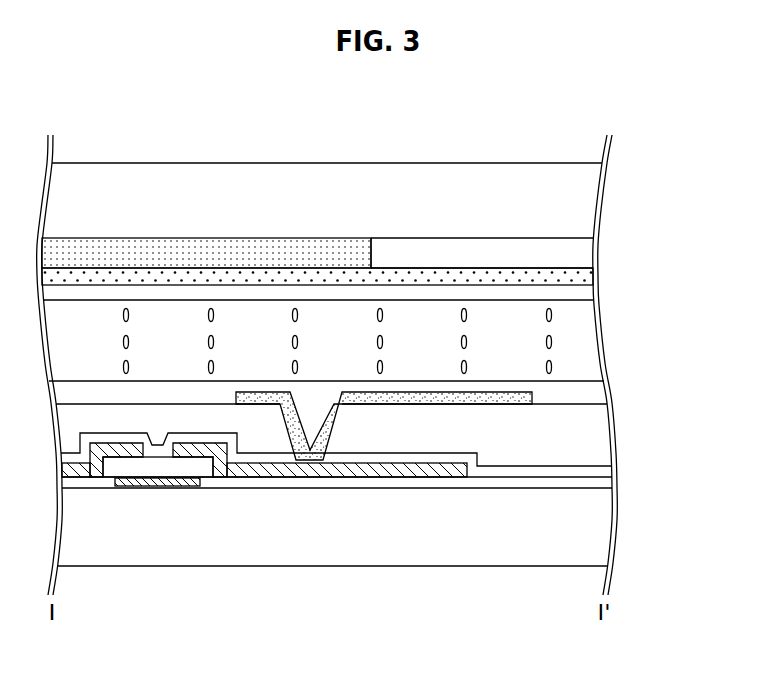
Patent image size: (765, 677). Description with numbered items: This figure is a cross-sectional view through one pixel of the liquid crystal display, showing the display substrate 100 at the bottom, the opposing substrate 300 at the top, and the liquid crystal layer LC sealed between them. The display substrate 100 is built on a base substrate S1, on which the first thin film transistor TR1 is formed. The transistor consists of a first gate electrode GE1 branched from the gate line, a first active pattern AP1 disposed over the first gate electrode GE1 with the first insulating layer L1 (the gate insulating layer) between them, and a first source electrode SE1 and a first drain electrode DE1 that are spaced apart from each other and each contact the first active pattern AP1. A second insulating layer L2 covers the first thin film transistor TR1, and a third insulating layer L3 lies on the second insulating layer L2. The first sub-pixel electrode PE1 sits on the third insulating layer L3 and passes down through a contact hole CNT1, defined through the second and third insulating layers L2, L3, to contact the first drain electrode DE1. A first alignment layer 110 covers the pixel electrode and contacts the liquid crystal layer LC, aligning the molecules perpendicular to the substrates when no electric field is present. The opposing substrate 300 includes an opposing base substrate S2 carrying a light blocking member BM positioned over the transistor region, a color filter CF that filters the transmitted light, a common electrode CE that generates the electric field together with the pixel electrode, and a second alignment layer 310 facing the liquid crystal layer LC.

The opposing substrate 300 is at (387, 213).
The opposing base substrate S2 is at (583, 202).
The light blocking member BM is at (262, 253).
The color filter CF is at (580, 253).
The common electrode CE is at (580, 275).
The second alignment layer 310 is at (355, 303).
The liquid crystal layer LC is at (583, 330).
The display substrate 100 is at (394, 501).
The first sub-pixel electrode PE1 is at (532, 401).
The contact hole CNT1 is at (318, 420).
The first alignment layer 110 is at (590, 392).
The third insulating layer L3 is at (595, 440).
The second insulating layer L2 is at (594, 468).
The first insulating layer L1 is at (593, 479).
The base substrate S1 is at (364, 537).
The first thin film transistor TR1 is at (164, 557).
The first source electrode SE1 is at (92, 470).
The first gate electrode GE1 is at (153, 480).
The first active pattern AP1 is at (187, 462).
The first drain electrode DE1 is at (243, 470).